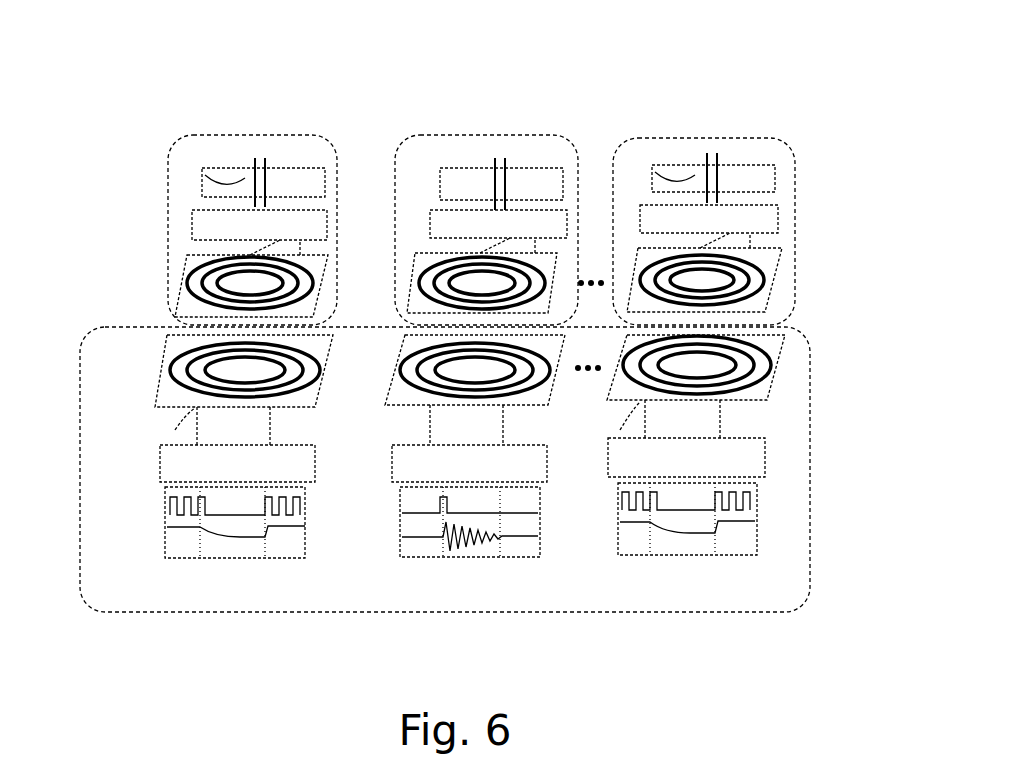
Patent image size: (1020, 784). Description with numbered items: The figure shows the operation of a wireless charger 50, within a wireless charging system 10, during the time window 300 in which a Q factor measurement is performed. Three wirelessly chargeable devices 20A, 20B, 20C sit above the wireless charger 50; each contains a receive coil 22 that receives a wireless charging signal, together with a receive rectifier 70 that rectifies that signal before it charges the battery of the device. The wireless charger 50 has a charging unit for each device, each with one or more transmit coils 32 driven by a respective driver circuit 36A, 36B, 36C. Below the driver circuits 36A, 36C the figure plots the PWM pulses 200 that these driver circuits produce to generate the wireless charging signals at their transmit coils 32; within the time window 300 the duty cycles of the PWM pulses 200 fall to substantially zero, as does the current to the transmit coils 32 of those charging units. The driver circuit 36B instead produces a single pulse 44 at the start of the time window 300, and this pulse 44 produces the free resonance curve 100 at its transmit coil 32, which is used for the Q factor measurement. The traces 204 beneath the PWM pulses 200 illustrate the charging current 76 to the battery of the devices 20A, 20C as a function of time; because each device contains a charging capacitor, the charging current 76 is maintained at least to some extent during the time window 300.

The wireless charging system 10 is at (138, 162).
The wirelessly chargeable device 20A is at (268, 133).
The wirelessly chargeable device 20B is at (470, 135).
The wirelessly chargeable device 20C is at (730, 136).
The charging current 76 is at (222, 168).
The receive rectifier 70 is at (307, 203).
The receive coil 22 is at (190, 275).
The transmit coil 32 is at (185, 355).
The driver circuit 36A is at (237, 463).
The driver circuit 36B is at (469, 463).
The driver circuit 36C is at (686, 457).
The wireless charger 50 is at (445, 469).
The PWM pulses 200 is at (158, 503).
The traces 204 is at (158, 530).
The time window 300 is at (237, 547).
The pulse 44 is at (435, 500).
The free resonance curve 100 is at (513, 520).